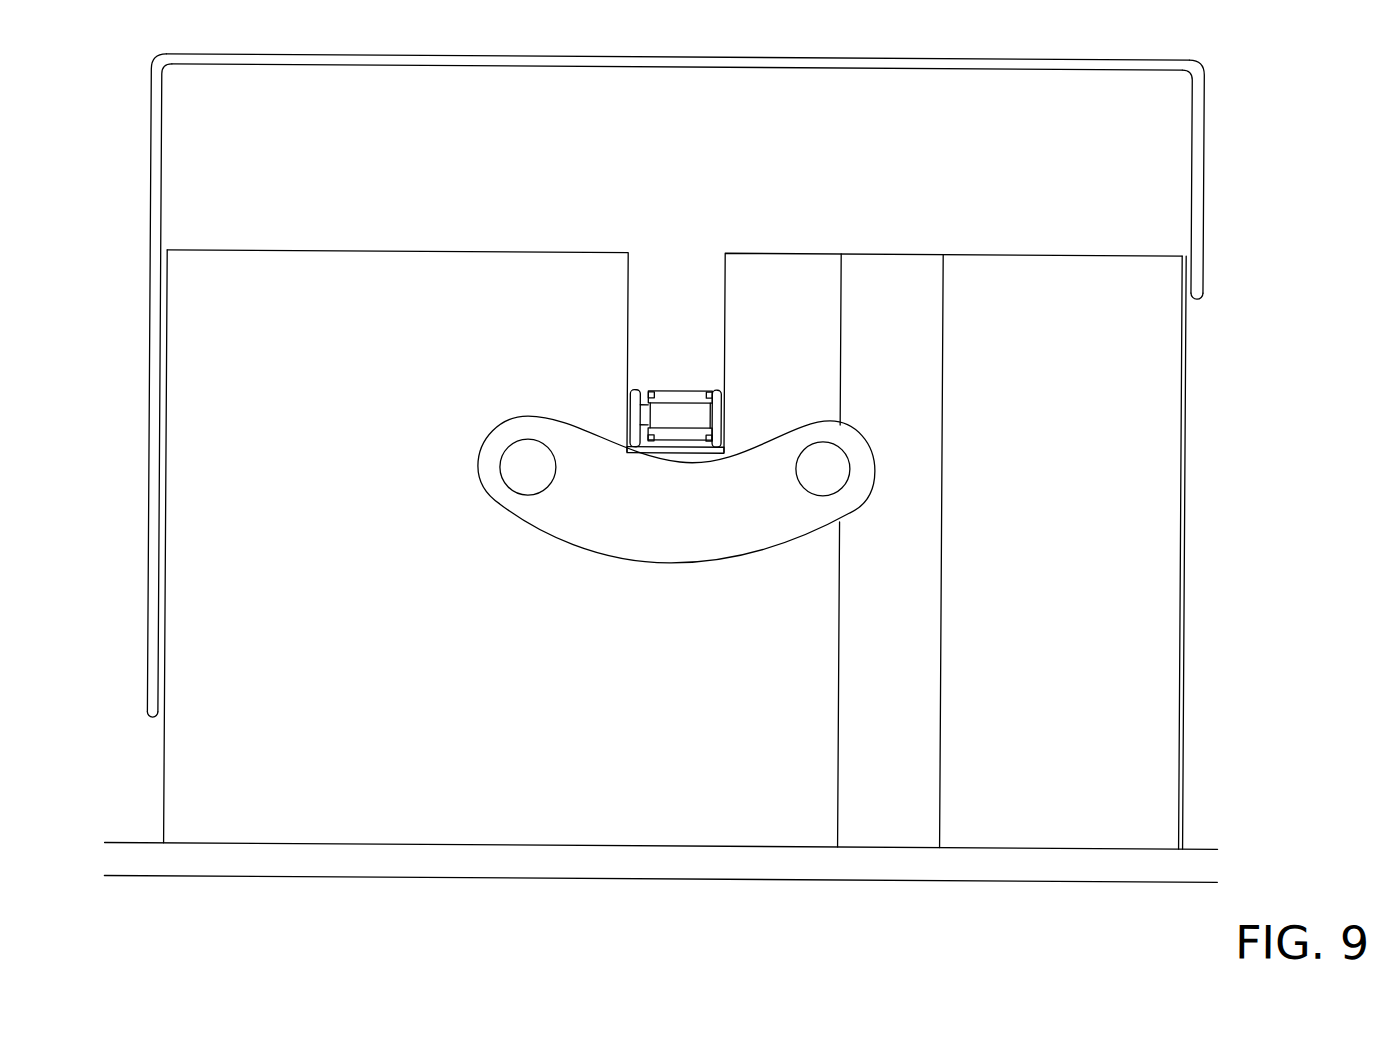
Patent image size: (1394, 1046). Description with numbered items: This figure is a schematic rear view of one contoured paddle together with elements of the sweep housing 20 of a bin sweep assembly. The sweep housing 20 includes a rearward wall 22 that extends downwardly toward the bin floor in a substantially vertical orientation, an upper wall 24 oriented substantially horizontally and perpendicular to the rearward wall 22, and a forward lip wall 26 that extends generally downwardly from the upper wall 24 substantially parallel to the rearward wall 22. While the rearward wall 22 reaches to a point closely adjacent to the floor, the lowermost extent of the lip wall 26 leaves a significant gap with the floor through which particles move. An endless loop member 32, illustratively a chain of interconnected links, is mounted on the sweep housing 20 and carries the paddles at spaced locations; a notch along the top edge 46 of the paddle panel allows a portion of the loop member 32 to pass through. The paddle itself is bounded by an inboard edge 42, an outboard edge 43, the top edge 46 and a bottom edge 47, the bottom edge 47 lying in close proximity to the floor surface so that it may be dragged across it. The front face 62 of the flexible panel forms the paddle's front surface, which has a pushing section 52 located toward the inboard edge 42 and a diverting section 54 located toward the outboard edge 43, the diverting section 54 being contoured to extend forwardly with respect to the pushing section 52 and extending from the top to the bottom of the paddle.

The sweep housing 20 is at (751, 379).
The rearward wall 22 is at (162, 170).
The upper wall 24 is at (948, 70).
The forward lip wall 26 is at (1204, 200).
The endless loop member 32 is at (697, 362).
The inboard edge 42 is at (160, 785).
The outboard edge 43 is at (1186, 606).
The top edge 46 is at (472, 252).
The bottom edge 47 is at (690, 848).
The pushing section 52 is at (568, 812).
The diverting section 54 is at (1036, 816).
The front face 62 is at (386, 634).